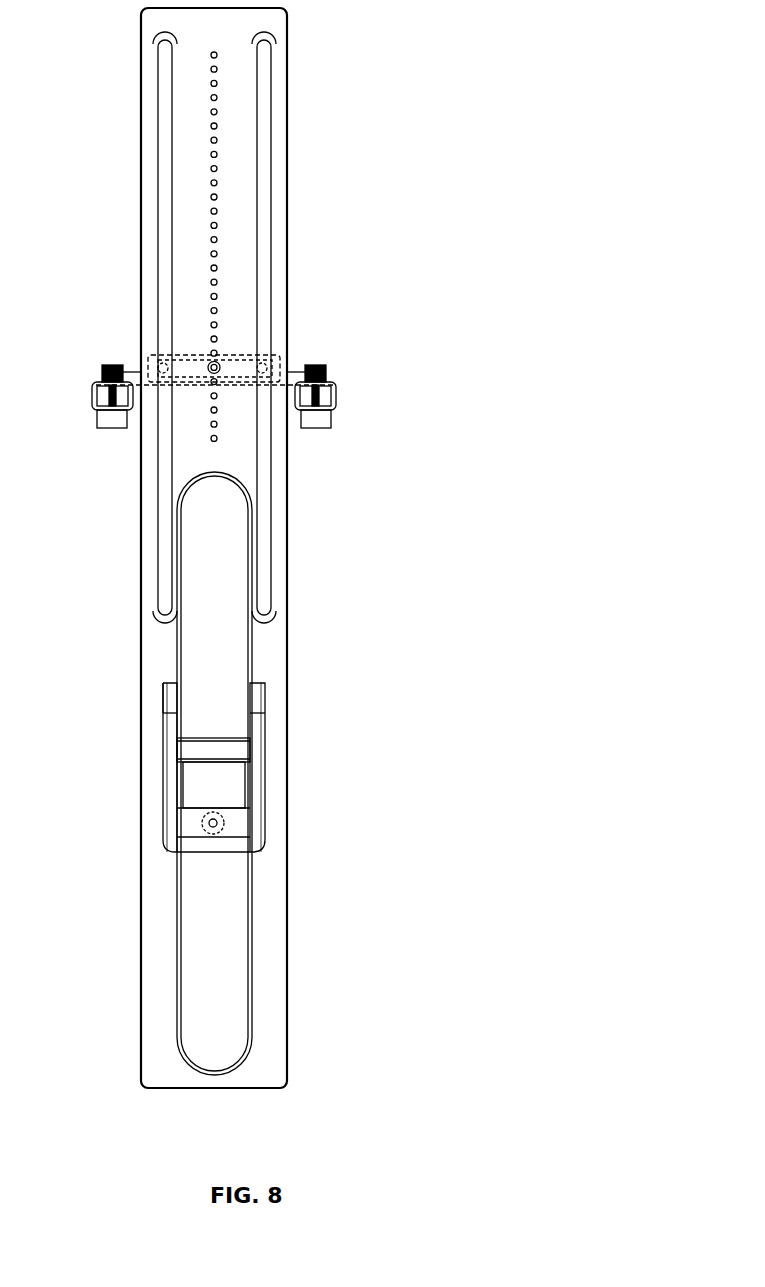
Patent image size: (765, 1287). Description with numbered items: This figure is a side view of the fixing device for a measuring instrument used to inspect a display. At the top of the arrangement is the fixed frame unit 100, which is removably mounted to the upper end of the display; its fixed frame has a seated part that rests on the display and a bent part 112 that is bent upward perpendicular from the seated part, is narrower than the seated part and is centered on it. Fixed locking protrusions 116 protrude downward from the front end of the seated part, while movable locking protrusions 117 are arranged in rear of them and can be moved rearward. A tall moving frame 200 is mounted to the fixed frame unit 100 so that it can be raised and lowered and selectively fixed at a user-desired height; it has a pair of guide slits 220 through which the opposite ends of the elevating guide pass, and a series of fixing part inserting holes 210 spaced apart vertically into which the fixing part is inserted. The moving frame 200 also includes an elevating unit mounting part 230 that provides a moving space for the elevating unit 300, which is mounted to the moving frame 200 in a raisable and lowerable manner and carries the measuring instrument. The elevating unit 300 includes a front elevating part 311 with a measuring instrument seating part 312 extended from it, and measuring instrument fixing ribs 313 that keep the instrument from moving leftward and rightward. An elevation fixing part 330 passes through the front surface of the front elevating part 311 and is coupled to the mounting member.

The fixed frame unit 100 is at (348, 373).
The bent part 112 is at (240, 365).
The fixed locking protrusions 116 is at (97, 405).
The movable locking protrusions 117 is at (110, 365).
The moving frame 200 is at (318, 10).
The fixing part inserting holes 210 is at (218, 197).
The guide slits 220 is at (170, 117).
The elevating unit mounting part 230 is at (250, 645).
The elevating unit 300 is at (222, 771).
The front elevating part 311 is at (165, 815).
The measuring instrument seating part 312 is at (210, 742).
The measuring instrument fixing ribs 313 is at (170, 713).
The elevation fixing part 330 is at (222, 823).